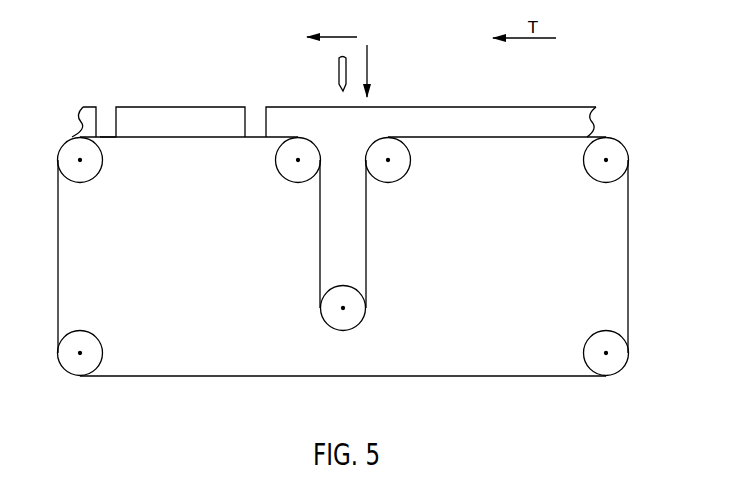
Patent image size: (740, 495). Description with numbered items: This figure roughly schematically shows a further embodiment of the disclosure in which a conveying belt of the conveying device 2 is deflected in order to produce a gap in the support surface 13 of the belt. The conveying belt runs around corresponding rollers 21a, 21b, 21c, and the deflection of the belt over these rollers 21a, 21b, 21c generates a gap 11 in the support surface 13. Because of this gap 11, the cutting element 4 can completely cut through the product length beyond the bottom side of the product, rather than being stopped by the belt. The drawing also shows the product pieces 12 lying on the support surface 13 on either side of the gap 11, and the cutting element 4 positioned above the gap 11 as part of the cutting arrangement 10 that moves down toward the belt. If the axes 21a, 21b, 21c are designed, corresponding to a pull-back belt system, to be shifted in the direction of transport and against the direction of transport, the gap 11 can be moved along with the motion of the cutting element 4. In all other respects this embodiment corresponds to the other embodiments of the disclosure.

The conveying device 2 is at (628, 248).
The cutting element 4 is at (339, 71).
The cutting device 10 is at (328, 93).
The gap 11 is at (368, 234).
The plate 12 is at (227, 106).
The support surface 13 is at (139, 138).
The roller 21a is at (276, 161).
The roller 21b is at (367, 310).
The roller 21c is at (411, 161).